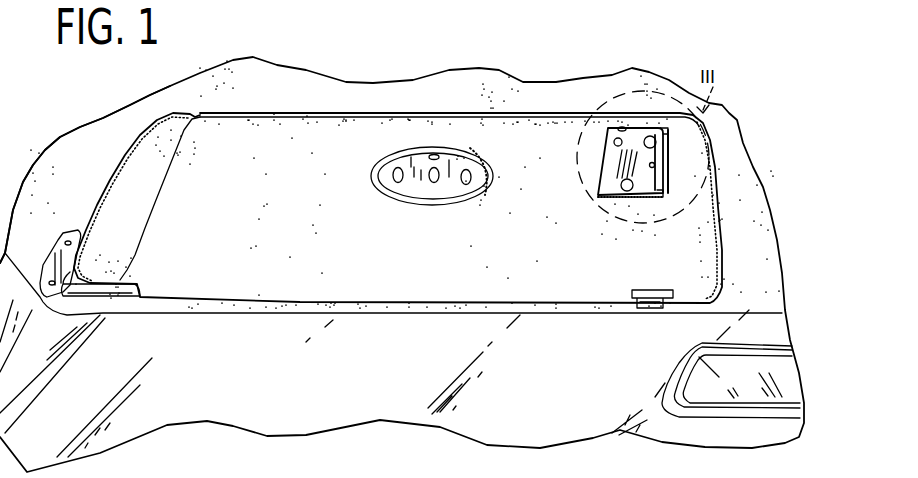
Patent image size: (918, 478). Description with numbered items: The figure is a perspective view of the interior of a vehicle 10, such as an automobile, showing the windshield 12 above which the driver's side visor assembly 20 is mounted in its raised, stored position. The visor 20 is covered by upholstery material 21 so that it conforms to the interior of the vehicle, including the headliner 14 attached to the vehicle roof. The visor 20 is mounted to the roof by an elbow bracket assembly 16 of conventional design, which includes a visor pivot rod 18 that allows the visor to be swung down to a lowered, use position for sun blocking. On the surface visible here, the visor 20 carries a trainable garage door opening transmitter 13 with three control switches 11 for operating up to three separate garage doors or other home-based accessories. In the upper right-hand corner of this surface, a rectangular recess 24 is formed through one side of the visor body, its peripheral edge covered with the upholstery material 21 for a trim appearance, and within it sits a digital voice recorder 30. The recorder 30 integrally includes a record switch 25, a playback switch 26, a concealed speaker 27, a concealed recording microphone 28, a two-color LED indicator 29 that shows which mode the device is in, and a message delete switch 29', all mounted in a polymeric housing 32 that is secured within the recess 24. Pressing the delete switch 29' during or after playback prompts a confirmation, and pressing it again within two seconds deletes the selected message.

The vehicle 10 is at (142, 94).
The control switches 11 is at (461, 184).
The windshield 12 is at (380, 361).
The trainable garage door opening transmitter 13 is at (446, 206).
The headliner 14 is at (277, 80).
The elbow bracket assembly 16 is at (50, 250).
The visor pivot rod 18 is at (128, 305).
The visor assembly 20 is at (363, 135).
The upholstery material 21 is at (351, 255).
The rectangular recess 24 is at (599, 197).
The record switch 25 is at (632, 197).
The playback switch 26 is at (660, 134).
The concealed speaker 27 is at (622, 158).
The concealed recording microphone 28 is at (608, 128).
The two-color LED indicator 29 is at (569, 133).
The message delete switch 29' is at (713, 162).
The digital voice recorder 30 is at (598, 173).
The polymeric housing 32 is at (637, 196).